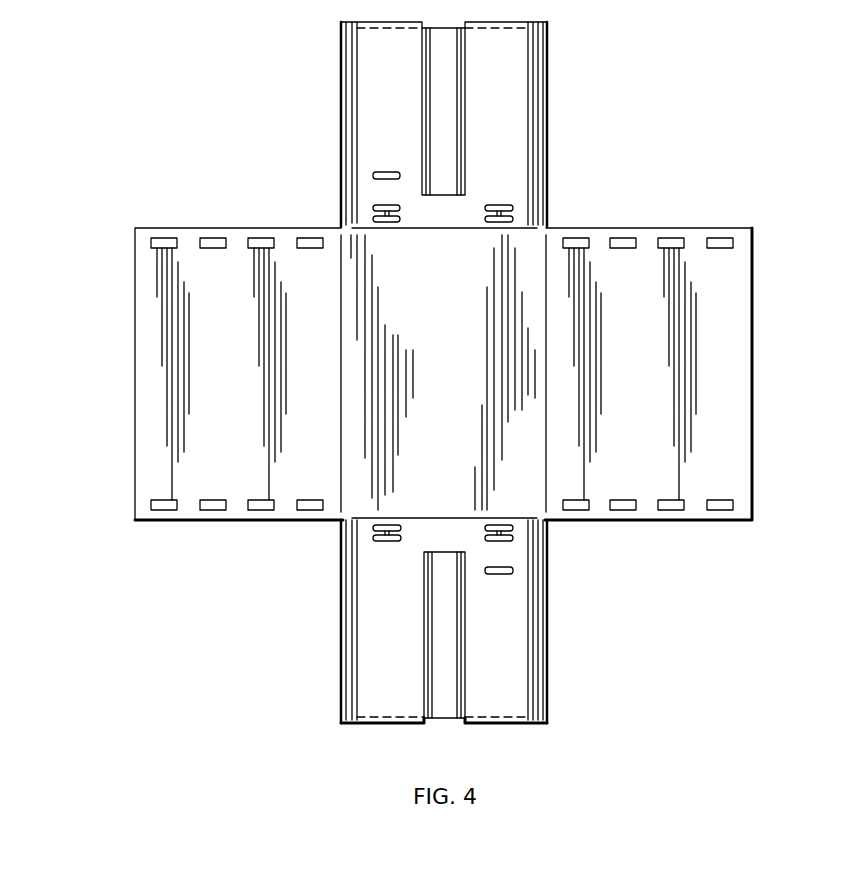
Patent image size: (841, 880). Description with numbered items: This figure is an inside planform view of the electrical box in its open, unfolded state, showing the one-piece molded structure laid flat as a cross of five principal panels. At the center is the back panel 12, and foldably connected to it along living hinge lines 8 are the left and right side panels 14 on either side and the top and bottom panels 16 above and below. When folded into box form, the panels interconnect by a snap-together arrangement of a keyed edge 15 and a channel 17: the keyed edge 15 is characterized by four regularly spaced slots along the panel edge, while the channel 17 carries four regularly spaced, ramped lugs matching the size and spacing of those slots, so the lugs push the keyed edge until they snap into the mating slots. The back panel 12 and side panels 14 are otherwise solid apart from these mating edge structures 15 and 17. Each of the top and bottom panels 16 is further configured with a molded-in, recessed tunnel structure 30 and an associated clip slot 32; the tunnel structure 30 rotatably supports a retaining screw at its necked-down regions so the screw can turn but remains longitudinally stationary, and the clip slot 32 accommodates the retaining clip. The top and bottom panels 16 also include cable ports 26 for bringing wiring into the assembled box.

The living hinge lines 8 is at (341, 258).
The back panel 12 is at (357, 490).
The side panels 14 is at (145, 430).
The keyed edge 15 is at (175, 228).
The top and bottom panels 16 is at (503, 102).
The channel 17 is at (341, 63).
The cable ports 26 is at (388, 206).
The tunnel structure 30 is at (465, 73).
The clip slot 32 is at (388, 172).